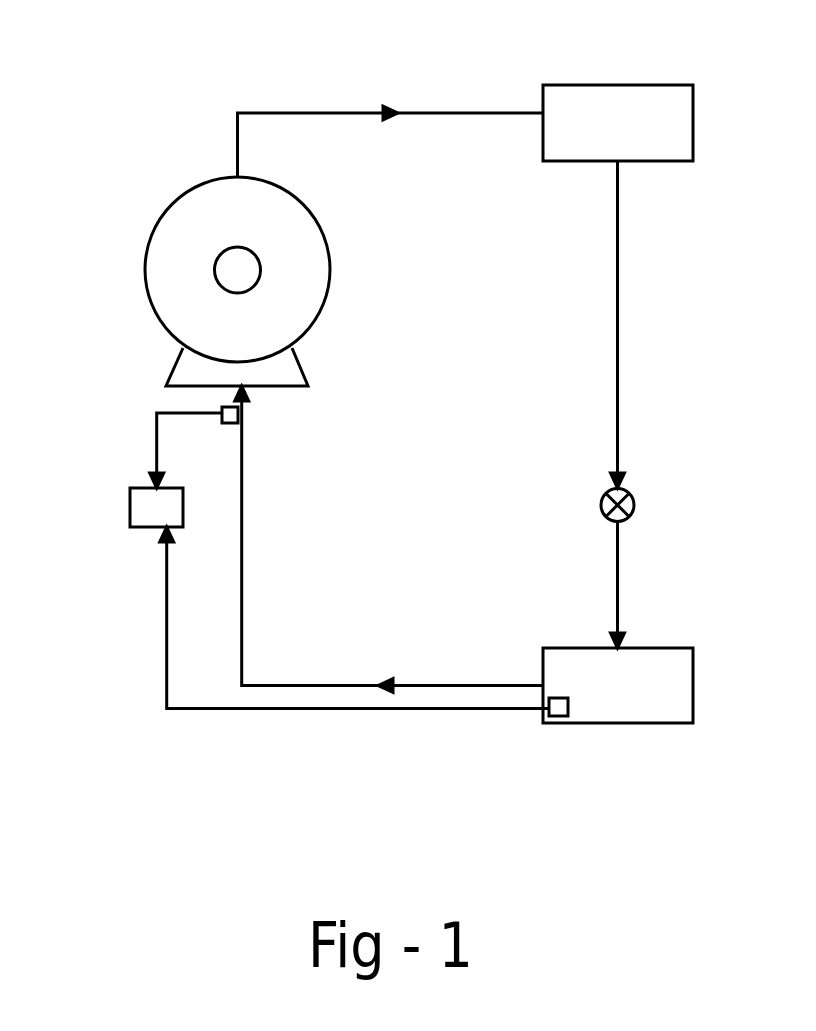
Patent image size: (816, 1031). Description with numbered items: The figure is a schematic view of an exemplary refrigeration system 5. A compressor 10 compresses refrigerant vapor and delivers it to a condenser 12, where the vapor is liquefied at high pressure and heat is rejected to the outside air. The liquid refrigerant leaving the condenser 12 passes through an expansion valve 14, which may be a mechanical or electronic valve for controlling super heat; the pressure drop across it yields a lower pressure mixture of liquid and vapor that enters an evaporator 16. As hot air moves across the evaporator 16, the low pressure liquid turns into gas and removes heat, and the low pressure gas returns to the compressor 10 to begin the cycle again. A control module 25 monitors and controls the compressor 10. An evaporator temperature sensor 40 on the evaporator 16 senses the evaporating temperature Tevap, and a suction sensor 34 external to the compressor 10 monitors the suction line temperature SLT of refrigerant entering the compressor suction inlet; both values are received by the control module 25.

The refrigeration system 5 is at (240, 57).
The compressor 10 is at (329, 262).
The condenser 12 is at (603, 85).
The expansion valve 14 is at (628, 495).
The evaporator 16 is at (660, 648).
The control module 25 is at (148, 527).
The suction sensor 34 is at (230, 423).
The evaporator temperature sensor 40 is at (566, 716).